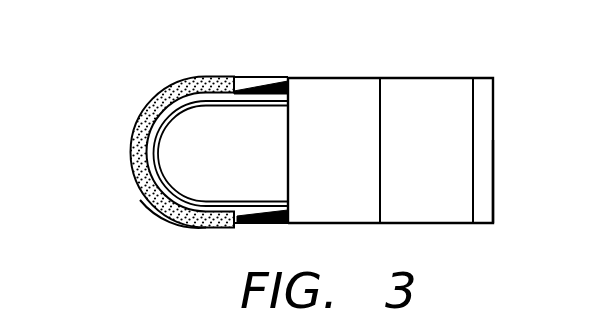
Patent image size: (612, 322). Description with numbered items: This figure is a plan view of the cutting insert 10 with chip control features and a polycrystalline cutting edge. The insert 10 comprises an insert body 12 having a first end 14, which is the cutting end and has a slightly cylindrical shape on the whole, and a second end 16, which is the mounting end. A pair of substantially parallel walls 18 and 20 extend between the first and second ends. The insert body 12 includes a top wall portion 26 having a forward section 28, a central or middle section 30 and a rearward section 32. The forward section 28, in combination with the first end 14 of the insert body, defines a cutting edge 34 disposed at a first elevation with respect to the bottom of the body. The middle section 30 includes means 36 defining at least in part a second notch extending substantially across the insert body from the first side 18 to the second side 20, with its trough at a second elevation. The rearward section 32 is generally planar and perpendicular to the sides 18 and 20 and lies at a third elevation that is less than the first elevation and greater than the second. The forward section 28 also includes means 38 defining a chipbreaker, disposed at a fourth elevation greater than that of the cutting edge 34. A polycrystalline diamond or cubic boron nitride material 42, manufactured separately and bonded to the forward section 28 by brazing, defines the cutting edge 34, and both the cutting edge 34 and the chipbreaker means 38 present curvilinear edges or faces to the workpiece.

The cutting insert 10 is at (149, 84).
The insert body 12 is at (493, 102).
The first end 14 is at (130, 152).
The second end 16 is at (493, 173).
The wall 18 is at (430, 222).
The wall 20 is at (391, 85).
The top wall portion 26 is at (444, 95).
The forward section 28 is at (177, 148).
The middle section 30 is at (336, 88).
The rearward section 32 is at (418, 102).
The cutting edge 34 is at (143, 198).
The second notch means 36 is at (339, 209).
The chipbreaker means 38 is at (217, 183).
The polycrystalline material 42 is at (212, 82).